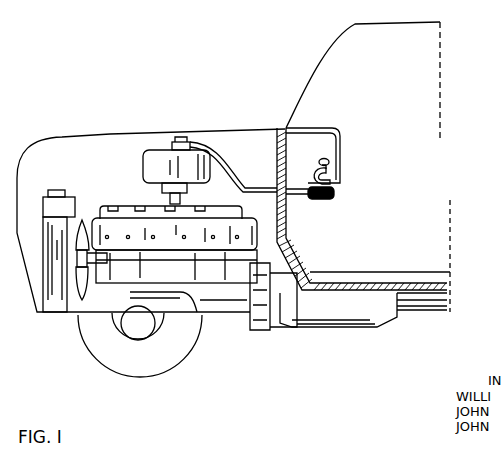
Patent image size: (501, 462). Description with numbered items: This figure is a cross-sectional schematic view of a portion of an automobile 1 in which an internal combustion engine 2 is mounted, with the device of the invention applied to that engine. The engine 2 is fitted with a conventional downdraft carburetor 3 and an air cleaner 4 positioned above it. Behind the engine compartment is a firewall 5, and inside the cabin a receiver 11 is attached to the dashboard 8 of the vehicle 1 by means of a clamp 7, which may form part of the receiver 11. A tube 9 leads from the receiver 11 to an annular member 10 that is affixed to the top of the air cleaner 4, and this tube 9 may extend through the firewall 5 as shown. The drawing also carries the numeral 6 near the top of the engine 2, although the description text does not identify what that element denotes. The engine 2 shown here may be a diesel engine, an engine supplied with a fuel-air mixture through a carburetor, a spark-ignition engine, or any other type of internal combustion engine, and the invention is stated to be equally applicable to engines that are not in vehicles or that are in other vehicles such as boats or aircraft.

The automobile 1 is at (244, 48).
The internal combustion engine 2 is at (198, 268).
The downdraft carburetor 3 is at (163, 188).
The air cleaner 4 is at (144, 165).
The firewall 5 is at (288, 238).
The valve cover 6 is at (118, 207).
The clamp 7 is at (318, 168).
The dashboard 8 is at (341, 148).
The tube 9 is at (240, 182).
The annular member 10 is at (176, 140).
The receiver 11 is at (335, 193).